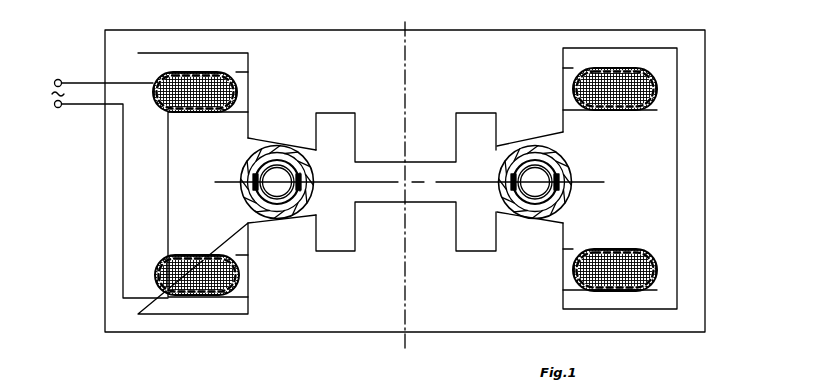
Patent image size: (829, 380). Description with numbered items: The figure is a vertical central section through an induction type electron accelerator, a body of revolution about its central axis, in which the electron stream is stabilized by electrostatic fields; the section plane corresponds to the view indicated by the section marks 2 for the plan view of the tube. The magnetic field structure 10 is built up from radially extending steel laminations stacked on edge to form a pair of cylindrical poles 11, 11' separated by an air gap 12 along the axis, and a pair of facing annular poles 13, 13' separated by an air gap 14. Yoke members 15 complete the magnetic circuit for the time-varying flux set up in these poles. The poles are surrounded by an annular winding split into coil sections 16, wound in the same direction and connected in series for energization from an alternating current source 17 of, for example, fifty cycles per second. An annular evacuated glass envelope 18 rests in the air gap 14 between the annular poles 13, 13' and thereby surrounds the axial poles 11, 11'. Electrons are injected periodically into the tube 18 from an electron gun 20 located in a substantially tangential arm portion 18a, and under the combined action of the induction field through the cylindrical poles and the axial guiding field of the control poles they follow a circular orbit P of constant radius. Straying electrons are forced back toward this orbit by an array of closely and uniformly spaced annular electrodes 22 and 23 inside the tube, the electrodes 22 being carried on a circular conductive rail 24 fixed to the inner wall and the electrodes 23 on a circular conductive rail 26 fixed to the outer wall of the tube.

The magnetic field structure 10 is at (633, 30).
The cylindrical pole 11 is at (406, 129).
The cylindrical pole 11' is at (406, 232).
The air gap 12 is at (433, 176).
The annular pole 13 is at (265, 134).
The annular pole 13' is at (267, 233).
The air gap 14 is at (258, 208).
The yoke member 15 is at (693, 105).
The coil section 16 is at (172, 73).
The alternating current source 17 is at (49, 103).
The annular evacuated envelope 18 is at (565, 160).
The arm portion 18a is at (312, 371).
The electron gun 20 is at (276, 371).
The annular electrode 22 is at (303, 174).
The annular electrode 23 is at (266, 172).
The circular conductive rail 24 is at (302, 189).
The circular conductive rail 26 is at (254, 177).
The acceleration orbit P is at (277, 182).
The section line 2- 2 is at (599, 192).